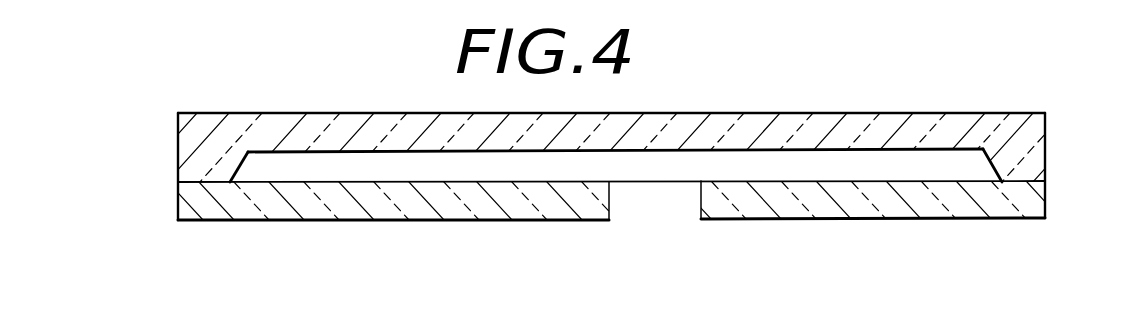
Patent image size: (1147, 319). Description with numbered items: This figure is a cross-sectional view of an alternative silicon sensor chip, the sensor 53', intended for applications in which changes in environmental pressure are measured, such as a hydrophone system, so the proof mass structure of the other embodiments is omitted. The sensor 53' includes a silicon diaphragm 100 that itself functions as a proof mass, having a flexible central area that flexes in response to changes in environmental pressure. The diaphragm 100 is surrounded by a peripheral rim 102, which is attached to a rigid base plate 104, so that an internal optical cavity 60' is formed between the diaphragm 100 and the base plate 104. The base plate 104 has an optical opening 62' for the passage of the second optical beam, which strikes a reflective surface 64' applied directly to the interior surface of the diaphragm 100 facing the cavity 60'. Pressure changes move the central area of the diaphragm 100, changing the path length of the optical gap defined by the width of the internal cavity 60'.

The sensor 53' is at (591, 159).
The internal optical cavity 60' is at (611, 123).
The optical opening 62' is at (655, 222).
The reflective surface 64' is at (615, 114).
The silicon diaphragm 100 is at (900, 111).
The peripheral rim 102 is at (1047, 153).
The rigid base plate 104 is at (1003, 203).